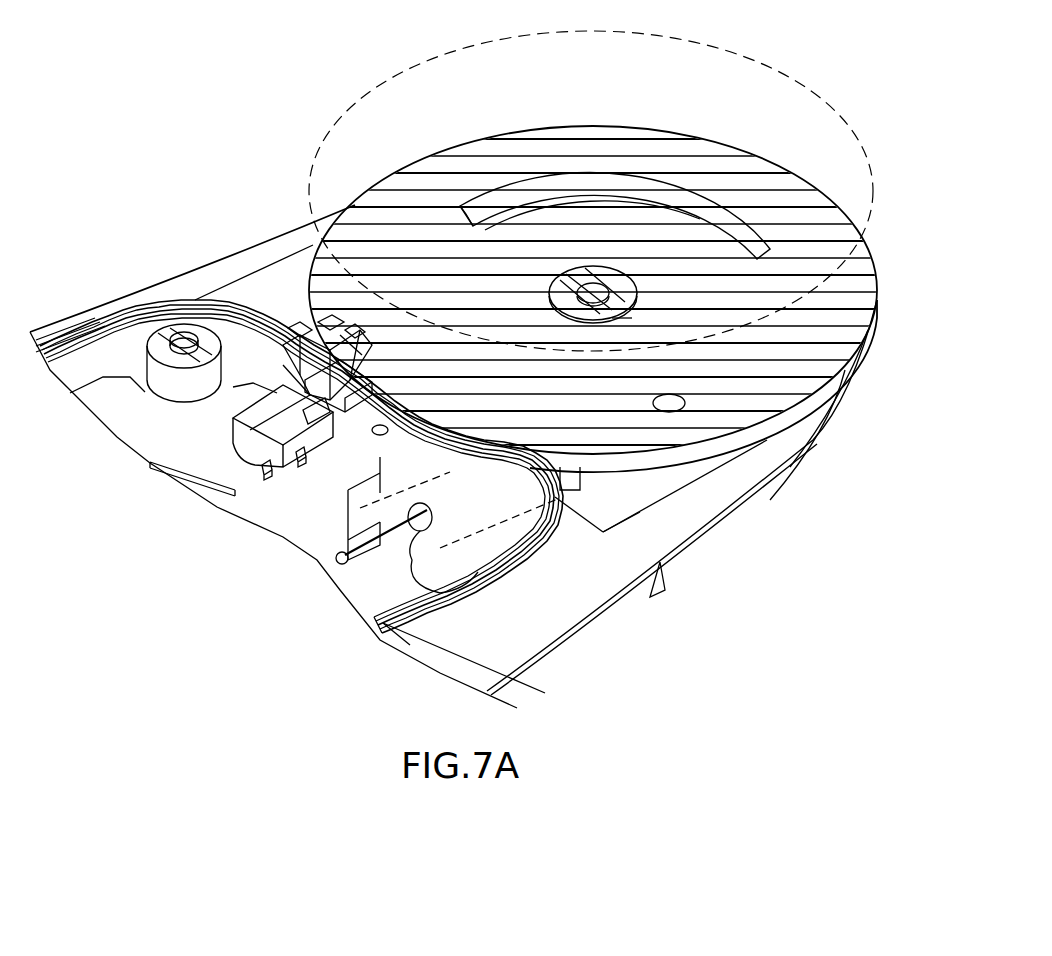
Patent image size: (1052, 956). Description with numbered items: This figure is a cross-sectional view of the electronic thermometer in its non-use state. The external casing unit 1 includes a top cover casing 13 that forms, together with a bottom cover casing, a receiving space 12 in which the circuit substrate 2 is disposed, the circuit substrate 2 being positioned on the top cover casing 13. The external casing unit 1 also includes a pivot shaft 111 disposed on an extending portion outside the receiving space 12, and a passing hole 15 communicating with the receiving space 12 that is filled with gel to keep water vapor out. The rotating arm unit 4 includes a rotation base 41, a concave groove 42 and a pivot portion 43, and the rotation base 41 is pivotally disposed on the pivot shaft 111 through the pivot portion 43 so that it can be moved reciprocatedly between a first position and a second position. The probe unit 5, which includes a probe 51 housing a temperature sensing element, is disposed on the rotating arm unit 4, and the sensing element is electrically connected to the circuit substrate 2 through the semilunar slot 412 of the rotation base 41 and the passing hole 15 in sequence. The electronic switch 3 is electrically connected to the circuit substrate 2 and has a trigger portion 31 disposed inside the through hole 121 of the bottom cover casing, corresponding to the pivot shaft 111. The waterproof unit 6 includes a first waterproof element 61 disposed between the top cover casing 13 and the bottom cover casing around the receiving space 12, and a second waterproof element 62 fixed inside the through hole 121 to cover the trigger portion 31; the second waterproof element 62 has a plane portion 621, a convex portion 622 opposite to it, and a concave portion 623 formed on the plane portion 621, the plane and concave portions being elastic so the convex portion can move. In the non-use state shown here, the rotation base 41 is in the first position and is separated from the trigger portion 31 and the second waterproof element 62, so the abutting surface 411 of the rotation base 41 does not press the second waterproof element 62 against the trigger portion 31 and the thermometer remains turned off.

The external casing unit 1 is at (850, 553).
The receiving space 12 is at (407, 645).
The through hole 121 is at (575, 478).
The top cover casing 13 is at (712, 507).
The passing hole 15 is at (435, 585).
The pivot shaft 111 is at (625, 305).
The circuit substrate 2 is at (83, 387).
The electronic switch 3 is at (100, 390).
The trigger portion 31 is at (200, 347).
The rotating arm unit 4 is at (998, 340).
The rotation base 41 is at (952, 282).
The abutting surface 411 is at (780, 427).
The semilunar slot 412 is at (775, 215).
The concave groove 42 is at (350, 352).
The pivot portion 43 is at (593, 266).
The probe unit 5 is at (218, 552).
The probe 51 is at (267, 511).
The waterproof unit 6 is at (193, 142).
The first waterproof element 61 is at (385, 640).
The second waterproof element 62 is at (252, 136).
The plane portion 621 is at (180, 327).
The convex portion 622 is at (307, 337).
The concave portion 623 is at (250, 347).